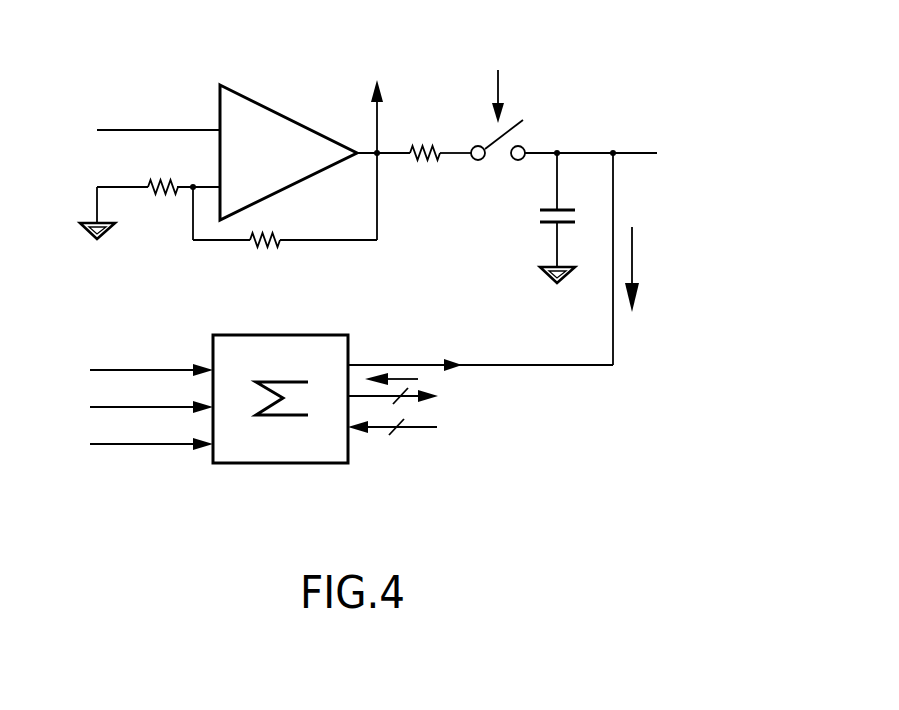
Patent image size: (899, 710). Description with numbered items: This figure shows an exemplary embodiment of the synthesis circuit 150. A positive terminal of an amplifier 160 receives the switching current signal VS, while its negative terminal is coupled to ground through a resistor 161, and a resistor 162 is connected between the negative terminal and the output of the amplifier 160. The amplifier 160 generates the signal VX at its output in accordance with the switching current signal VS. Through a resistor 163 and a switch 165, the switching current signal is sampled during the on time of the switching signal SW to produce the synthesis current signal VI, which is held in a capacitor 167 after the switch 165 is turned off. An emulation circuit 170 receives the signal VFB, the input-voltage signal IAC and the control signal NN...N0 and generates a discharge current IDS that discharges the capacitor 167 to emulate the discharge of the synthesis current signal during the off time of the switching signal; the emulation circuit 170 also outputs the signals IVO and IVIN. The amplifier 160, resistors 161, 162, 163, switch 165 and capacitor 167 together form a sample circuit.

The synthesis circuit 150 is at (782, 48).
The amplifier 160 is at (288, 148).
The resistor 161 is at (154, 207).
The resistor 162 is at (274, 261).
The resistor 163 is at (430, 174).
The switch 165 is at (518, 118).
The capacitor 167 is at (528, 219).
The emulation circuit 170 is at (280, 381).